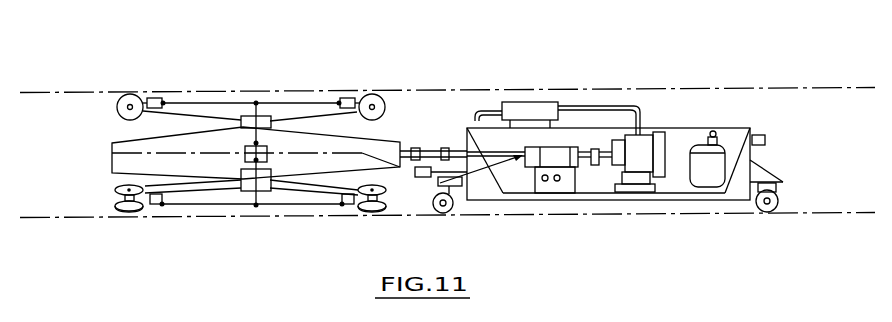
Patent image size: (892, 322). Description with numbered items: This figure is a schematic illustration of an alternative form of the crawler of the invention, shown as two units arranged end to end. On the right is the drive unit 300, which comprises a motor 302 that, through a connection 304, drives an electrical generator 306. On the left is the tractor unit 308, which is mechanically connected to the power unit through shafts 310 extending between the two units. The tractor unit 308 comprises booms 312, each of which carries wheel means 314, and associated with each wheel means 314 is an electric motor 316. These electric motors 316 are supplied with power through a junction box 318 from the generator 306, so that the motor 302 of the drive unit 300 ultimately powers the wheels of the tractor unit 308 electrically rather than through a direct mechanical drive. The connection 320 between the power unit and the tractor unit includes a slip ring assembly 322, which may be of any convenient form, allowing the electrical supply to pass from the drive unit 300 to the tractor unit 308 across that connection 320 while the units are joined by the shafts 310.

The drive unit 300 is at (675, 209).
The motor 302 is at (646, 136).
The connection 304 is at (597, 149).
The electrical generator 306 is at (560, 147).
The tractor unit 308 is at (195, 208).
The shafts 310 is at (431, 148).
The booms 312 is at (217, 113).
The wheel means 314 is at (127, 96).
The electric motor 316 is at (153, 97).
The junction box 318 is at (268, 160).
The connection 320 is at (480, 176).
The slip ring assembly 322 is at (422, 178).